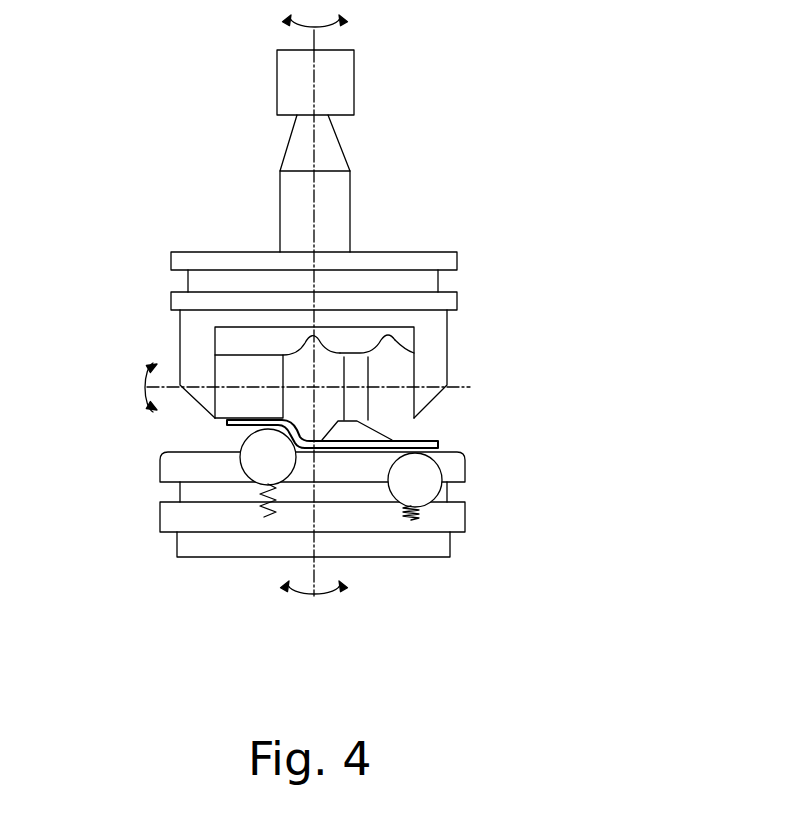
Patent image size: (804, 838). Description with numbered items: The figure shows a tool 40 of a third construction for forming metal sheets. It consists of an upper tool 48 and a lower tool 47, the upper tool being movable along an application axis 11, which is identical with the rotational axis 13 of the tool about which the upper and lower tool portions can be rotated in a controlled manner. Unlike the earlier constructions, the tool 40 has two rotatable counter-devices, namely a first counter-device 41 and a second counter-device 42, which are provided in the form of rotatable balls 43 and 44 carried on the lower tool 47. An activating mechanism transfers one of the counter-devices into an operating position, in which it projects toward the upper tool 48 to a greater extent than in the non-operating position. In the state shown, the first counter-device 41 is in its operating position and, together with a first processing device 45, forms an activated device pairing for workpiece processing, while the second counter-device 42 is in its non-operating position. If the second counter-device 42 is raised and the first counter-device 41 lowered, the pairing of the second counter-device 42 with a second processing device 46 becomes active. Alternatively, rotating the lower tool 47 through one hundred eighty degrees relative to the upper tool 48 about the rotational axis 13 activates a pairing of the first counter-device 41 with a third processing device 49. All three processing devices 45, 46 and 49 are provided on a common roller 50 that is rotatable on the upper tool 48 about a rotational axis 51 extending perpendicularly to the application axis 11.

The application axis 11 is at (261, 303).
The rotational axis of the tool 13 is at (314, 48).
The tool 40 is at (368, 88).
The first counter-device 41 is at (243, 440).
The second counter-device 42 is at (438, 470).
The rotatable ball 43 is at (257, 458).
The rotatable ball 44 is at (423, 478).
The first processing device 45 is at (267, 353).
The second processing device 46 is at (403, 343).
The lower tool 47 is at (190, 514).
The upper tool 48 is at (445, 252).
The third processing device 49 is at (358, 352).
The common roller 50 is at (402, 372).
The rotational axis 51 is at (177, 383).